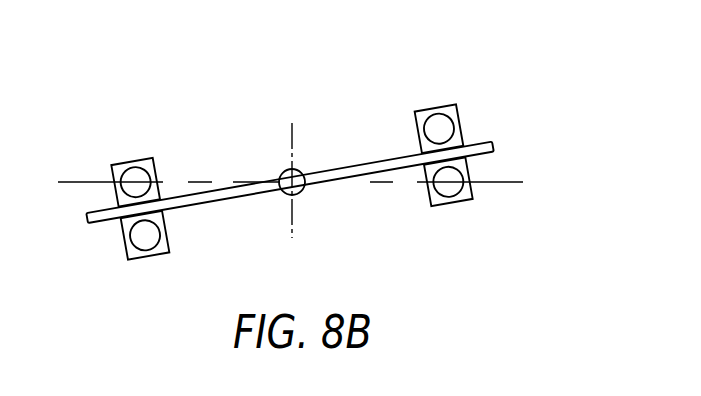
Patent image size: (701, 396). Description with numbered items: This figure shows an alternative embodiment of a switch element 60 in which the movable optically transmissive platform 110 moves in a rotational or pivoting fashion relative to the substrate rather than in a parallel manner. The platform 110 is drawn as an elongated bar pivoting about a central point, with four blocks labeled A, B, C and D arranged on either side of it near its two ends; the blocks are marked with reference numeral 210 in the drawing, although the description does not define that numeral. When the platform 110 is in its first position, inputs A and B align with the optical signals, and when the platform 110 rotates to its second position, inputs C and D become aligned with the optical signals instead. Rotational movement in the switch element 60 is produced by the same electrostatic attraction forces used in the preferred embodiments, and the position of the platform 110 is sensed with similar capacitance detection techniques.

The switch element 60 is at (470, 63).
The movable optically transmissive platform 110 is at (487, 140).
The sensor block 210 is at (152, 159).